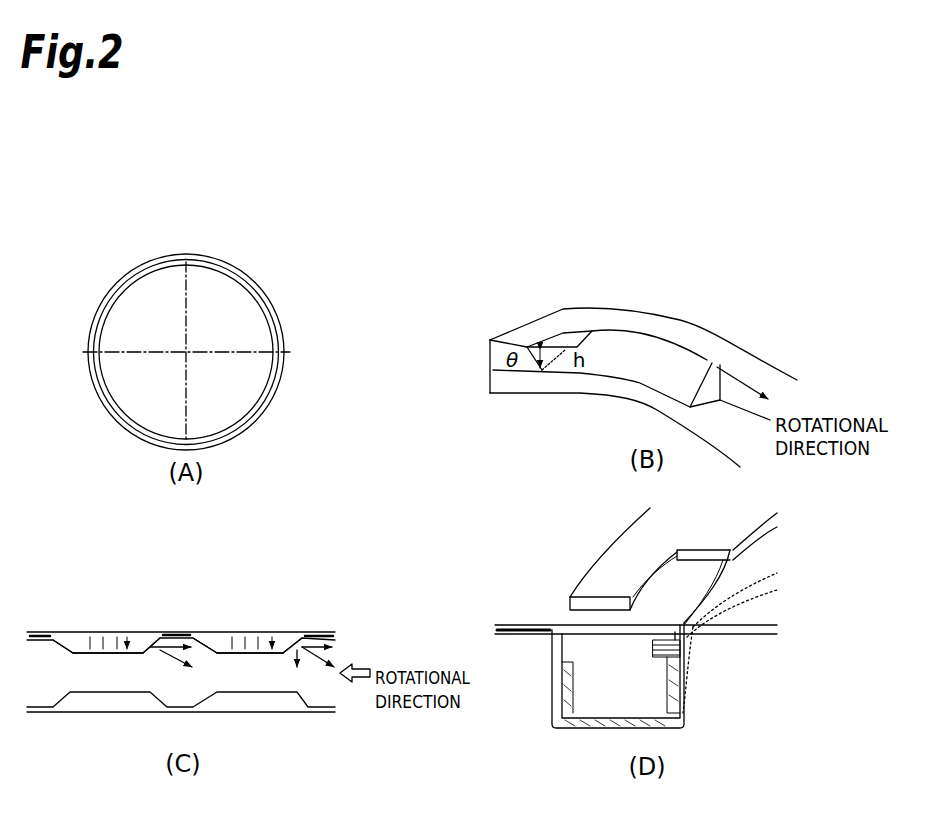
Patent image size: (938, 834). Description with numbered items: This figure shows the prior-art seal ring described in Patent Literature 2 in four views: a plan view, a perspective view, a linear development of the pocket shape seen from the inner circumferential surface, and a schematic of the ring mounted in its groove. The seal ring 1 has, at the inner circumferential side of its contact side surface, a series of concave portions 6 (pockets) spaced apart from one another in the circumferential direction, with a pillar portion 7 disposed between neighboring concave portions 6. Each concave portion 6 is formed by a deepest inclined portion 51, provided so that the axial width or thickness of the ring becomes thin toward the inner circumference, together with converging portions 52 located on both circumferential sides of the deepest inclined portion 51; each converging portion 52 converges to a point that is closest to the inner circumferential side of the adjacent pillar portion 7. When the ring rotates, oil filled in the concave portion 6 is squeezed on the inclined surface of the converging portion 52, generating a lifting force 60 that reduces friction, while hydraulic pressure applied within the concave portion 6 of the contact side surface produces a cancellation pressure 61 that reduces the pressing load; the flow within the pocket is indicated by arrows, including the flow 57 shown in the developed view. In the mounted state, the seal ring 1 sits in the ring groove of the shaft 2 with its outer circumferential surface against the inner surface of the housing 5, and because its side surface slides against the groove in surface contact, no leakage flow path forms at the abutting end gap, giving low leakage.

The seal ring 1 is at (651, 542).
The shaft 2 is at (539, 675).
The housing 5 is at (529, 599).
The concave portion 6 is at (219, 280).
The pillar portion 7 is at (268, 342).
The deepest inclined portion 51 is at (654, 356).
The converging portion 52 is at (571, 329).
The flow 57 is at (185, 632).
The lifting force 60 is at (313, 675).
The cancellation pressure 61 is at (280, 638).